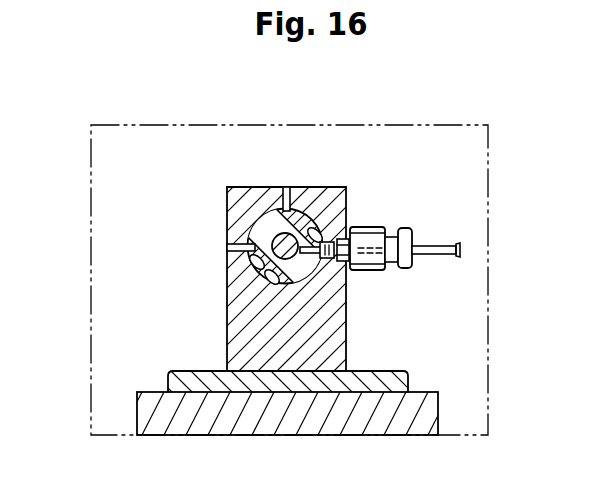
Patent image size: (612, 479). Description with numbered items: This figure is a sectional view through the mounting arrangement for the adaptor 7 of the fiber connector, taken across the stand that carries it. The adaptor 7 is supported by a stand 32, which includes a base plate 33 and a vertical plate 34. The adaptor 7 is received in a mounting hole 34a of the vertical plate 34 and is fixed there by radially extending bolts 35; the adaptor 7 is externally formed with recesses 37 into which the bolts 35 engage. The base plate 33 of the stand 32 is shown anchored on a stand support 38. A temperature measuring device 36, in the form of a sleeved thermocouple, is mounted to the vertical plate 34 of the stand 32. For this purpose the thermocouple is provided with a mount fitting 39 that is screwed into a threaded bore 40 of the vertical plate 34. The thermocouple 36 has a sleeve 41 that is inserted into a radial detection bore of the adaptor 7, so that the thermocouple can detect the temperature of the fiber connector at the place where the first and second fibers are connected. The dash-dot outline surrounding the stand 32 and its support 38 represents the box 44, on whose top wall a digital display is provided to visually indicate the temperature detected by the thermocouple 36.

The adaptor 7 is at (260, 188).
The stand 32 is at (349, 332).
The base plate 33 is at (172, 372).
The vertical plate 34 is at (316, 187).
The mounting hole 34a is at (273, 283).
The bolts 35 is at (300, 187).
The temperature measuring device 36 is at (373, 222).
The recesses 37 is at (243, 260).
The stand support 38 is at (428, 392).
The mount fitting 39 is at (382, 226).
The threaded bore 40 is at (325, 262).
The sleeve 41 is at (346, 188).
The box 44 is at (488, 227).